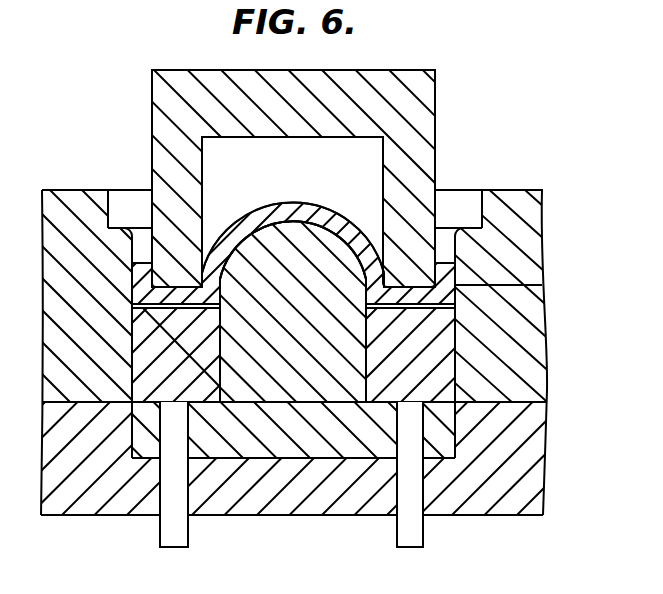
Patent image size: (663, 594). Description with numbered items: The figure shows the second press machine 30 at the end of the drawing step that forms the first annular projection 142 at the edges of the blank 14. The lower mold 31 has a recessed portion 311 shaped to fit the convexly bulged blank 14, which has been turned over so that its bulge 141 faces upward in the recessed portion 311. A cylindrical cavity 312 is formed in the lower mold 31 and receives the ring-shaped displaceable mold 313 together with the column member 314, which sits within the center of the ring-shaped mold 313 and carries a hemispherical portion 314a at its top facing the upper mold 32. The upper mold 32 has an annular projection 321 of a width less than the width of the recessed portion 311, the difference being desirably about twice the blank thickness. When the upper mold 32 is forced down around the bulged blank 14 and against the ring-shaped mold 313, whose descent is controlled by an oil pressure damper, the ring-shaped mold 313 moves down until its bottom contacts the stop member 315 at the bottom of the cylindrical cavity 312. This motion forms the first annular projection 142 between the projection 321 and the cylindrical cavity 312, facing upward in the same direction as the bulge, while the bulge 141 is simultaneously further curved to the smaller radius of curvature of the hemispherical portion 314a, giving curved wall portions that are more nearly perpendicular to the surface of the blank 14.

The second press machine 30 is at (474, 112).
The lower mold 31 is at (68, 206).
The upper mold 32 is at (153, 107).
The recessed portion 311 is at (471, 201).
The cylindrical cavity 312 is at (542, 286).
The ring-shaped displaceable mold 313 is at (364, 333).
The column member 314 is at (247, 388).
The hemispherical portion 314a is at (288, 232).
The stop member 315 is at (337, 445).
The annular projection 321 is at (194, 202).
The blank 14 is at (456, 319).
The bulge 141 is at (331, 221).
The first annular projection 142 is at (460, 249).